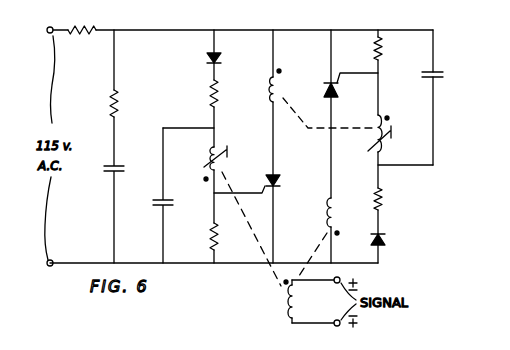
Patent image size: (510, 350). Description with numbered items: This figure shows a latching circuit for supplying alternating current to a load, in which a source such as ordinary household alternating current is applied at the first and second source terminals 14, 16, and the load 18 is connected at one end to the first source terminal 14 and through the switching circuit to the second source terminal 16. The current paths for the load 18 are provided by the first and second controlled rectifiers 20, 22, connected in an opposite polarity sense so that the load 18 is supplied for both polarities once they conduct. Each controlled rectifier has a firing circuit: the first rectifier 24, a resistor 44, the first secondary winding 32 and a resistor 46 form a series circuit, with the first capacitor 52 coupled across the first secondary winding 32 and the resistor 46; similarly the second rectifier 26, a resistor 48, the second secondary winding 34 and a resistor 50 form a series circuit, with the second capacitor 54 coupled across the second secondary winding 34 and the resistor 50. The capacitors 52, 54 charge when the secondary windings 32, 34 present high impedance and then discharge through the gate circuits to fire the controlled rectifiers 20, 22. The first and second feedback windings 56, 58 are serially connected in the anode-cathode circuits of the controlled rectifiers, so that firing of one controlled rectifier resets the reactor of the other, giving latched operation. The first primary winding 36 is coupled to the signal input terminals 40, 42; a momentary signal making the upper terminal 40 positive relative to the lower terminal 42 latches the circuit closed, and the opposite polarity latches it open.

The first source terminal 14 is at (47, 30).
The second source terminal 16 is at (47, 263).
The load 18 is at (105, 23).
The first controlled rectifier 20 is at (280, 184).
The second controlled rectifier 22 is at (336, 93).
The first rectifier 24 is at (224, 58).
The second rectifier 26 is at (386, 239).
The first secondary winding 32 is at (221, 149).
The second secondary winding 34 is at (386, 149).
The first primary winding 36 is at (286, 304).
The upper signal input terminal 40 is at (340, 278).
The lower signal input terminal 42 is at (335, 325).
The resistor 44 is at (221, 93).
The resistor 46 is at (210, 240).
The resistor 48 is at (385, 199).
The resistor 50 is at (385, 50).
The first capacitor 52 is at (156, 205).
The second capacitor 54 is at (441, 79).
The first feedback winding 56 is at (326, 212).
The second feedback winding 58 is at (282, 89).